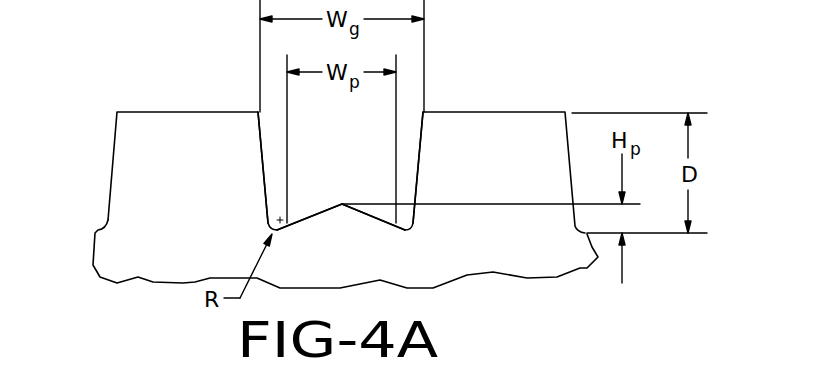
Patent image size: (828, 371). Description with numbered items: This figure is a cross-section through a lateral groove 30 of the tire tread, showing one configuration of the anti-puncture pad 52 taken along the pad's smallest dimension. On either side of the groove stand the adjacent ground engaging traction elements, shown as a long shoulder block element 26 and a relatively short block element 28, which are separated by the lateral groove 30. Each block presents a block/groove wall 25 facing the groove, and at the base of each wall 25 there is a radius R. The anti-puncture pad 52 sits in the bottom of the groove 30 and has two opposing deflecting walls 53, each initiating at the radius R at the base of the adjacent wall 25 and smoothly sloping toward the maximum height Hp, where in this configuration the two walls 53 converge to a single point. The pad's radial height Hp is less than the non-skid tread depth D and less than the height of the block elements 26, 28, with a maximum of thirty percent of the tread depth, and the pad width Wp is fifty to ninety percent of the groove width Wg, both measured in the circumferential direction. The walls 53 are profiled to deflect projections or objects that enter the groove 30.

The block/groove wall 25 is at (262, 148).
The long shoulder block element 26 is at (203, 176).
The short shoulder block element 28 is at (510, 179).
The lateral groove 30 is at (280, 122).
The anti-puncture pad 52 is at (338, 225).
The deflecting wall 53 is at (366, 215).